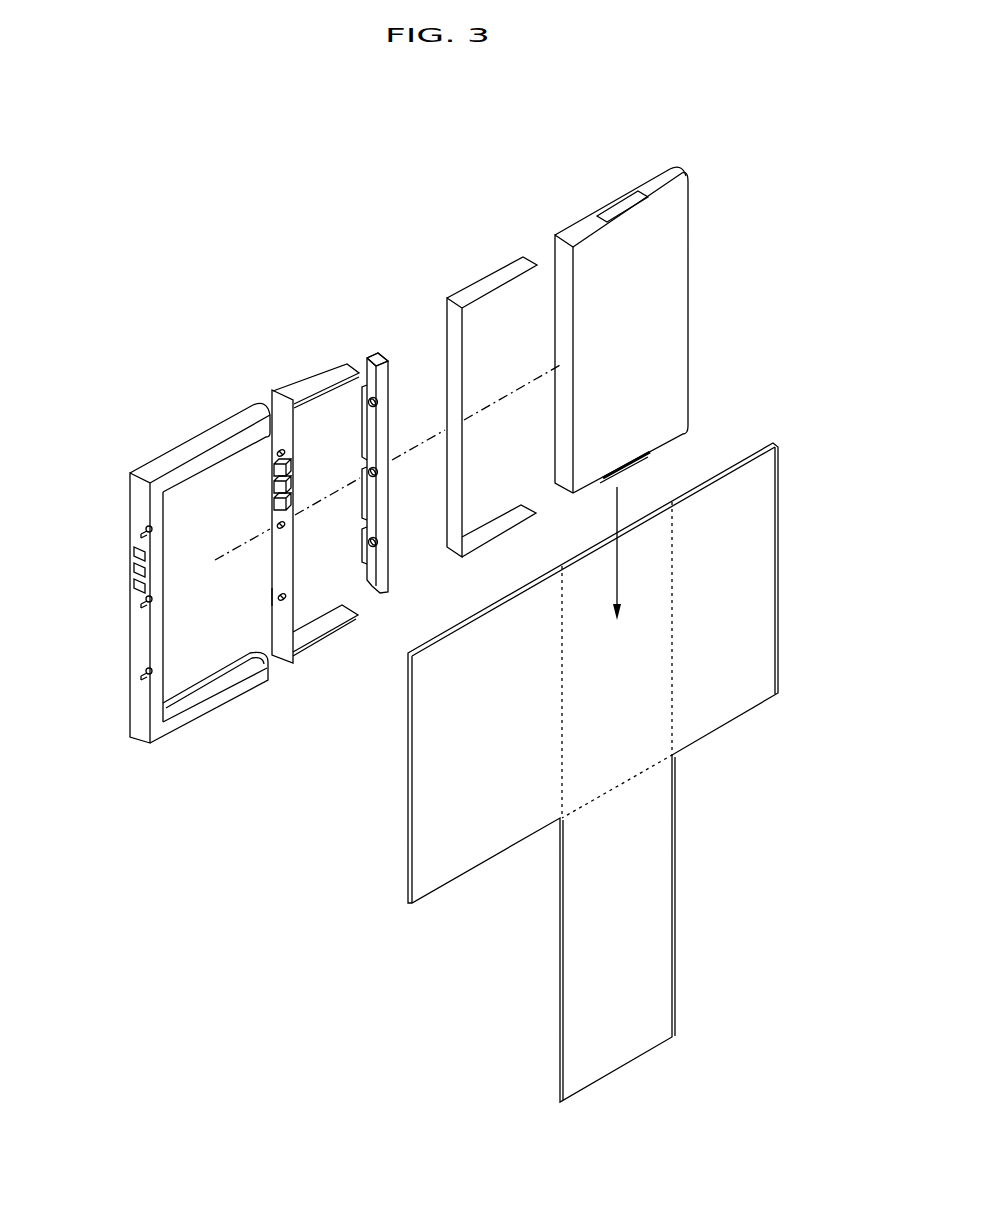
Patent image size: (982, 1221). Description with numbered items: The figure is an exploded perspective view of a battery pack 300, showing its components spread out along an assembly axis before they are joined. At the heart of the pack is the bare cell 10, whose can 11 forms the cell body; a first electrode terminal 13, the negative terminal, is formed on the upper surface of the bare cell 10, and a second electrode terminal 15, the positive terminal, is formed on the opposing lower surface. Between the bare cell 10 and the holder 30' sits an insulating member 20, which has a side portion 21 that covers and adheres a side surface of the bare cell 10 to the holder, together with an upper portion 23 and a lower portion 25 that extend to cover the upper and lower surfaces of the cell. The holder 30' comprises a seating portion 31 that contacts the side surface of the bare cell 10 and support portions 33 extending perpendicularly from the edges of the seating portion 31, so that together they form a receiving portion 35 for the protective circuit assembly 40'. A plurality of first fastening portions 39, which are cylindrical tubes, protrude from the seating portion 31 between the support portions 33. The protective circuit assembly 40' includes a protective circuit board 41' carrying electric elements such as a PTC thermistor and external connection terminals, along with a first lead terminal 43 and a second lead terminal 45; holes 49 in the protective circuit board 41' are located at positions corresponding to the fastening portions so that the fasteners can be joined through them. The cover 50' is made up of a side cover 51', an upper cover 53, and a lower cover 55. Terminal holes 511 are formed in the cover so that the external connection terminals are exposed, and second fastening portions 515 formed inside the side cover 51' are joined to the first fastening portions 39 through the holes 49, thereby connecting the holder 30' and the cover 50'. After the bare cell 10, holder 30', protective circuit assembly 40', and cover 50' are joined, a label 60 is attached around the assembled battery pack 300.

The battery pack 300 is at (200, 997).
The bare cell 10 is at (645, 304).
The can 11 is at (683, 297).
The first electrode terminal 13 is at (612, 210).
The second electrode terminal 15 is at (653, 455).
The insulating member 20 is at (497, 384).
The side portion 21 is at (455, 353).
The upper portion 23 is at (510, 272).
The lower portion 25 is at (497, 522).
The holder 30' is at (371, 442).
The seating portion 31 is at (381, 358).
The support portions 33 is at (389, 422).
The receiving portion 35 is at (363, 443).
The first fastening portions 39 is at (369, 543).
The protective circuit assembly 40' is at (275, 482).
The protective circuit board 41' is at (257, 528).
The first lead terminal 43 is at (320, 380).
The second lead terminal 45 is at (333, 614).
The holes 49 is at (274, 599).
The cover 50' is at (174, 540).
The side cover 51' is at (123, 608).
The terminal holes 511 is at (134, 590).
The second fastening portions 515 is at (140, 528).
The upper cover 53 is at (213, 432).
The lower cover 55 is at (214, 706).
The label 60 is at (412, 805).